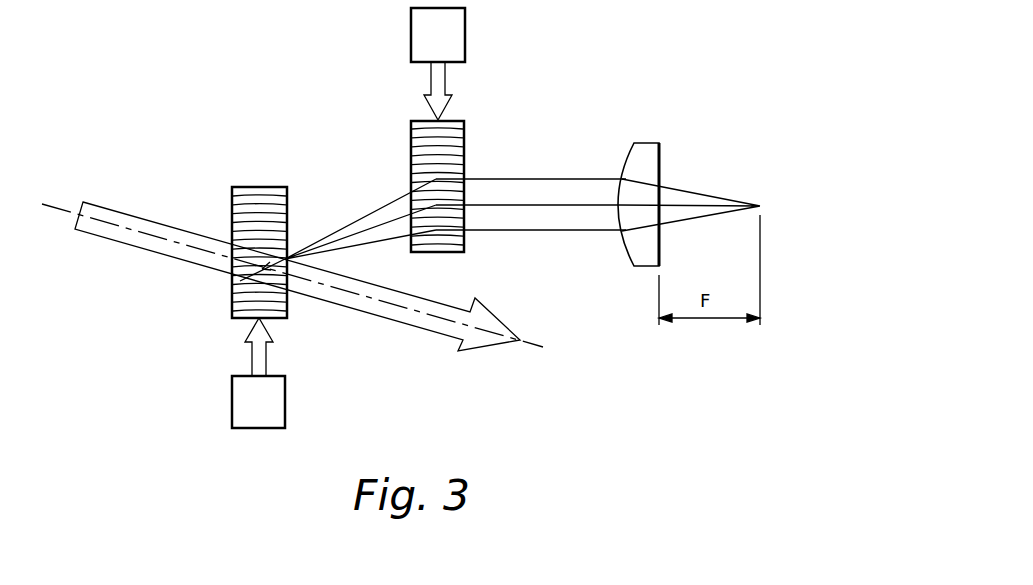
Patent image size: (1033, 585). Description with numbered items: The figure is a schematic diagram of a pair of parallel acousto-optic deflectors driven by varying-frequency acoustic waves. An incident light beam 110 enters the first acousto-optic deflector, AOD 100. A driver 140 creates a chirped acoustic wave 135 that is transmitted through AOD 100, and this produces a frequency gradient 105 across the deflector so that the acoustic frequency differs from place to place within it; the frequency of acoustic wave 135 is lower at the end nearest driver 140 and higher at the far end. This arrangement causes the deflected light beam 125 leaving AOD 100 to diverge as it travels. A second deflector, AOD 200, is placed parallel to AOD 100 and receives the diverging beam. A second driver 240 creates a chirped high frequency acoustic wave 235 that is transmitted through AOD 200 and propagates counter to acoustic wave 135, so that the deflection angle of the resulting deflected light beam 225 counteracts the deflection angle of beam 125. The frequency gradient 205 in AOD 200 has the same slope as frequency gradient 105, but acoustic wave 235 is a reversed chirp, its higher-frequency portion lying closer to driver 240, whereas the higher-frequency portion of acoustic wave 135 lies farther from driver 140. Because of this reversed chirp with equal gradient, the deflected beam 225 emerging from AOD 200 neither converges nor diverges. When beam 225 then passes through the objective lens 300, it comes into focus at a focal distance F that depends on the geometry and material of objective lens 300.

The acousto-optic deflector 100 is at (233, 228).
The frequency gradient 105 is at (238, 195).
The incident light beam 110 is at (102, 207).
The deflected light beam 125 is at (362, 217).
The chirped acoustic wave 135 is at (250, 360).
The driver 140 is at (231, 400).
The second acousto-optic deflector 200 is at (467, 202).
The frequency gradient 205 is at (465, 137).
The deflected light beam 225 is at (557, 178).
The chirped high frequency acoustic wave 235 is at (446, 77).
The driver 240 is at (466, 33).
The objective lens 300 is at (650, 143).